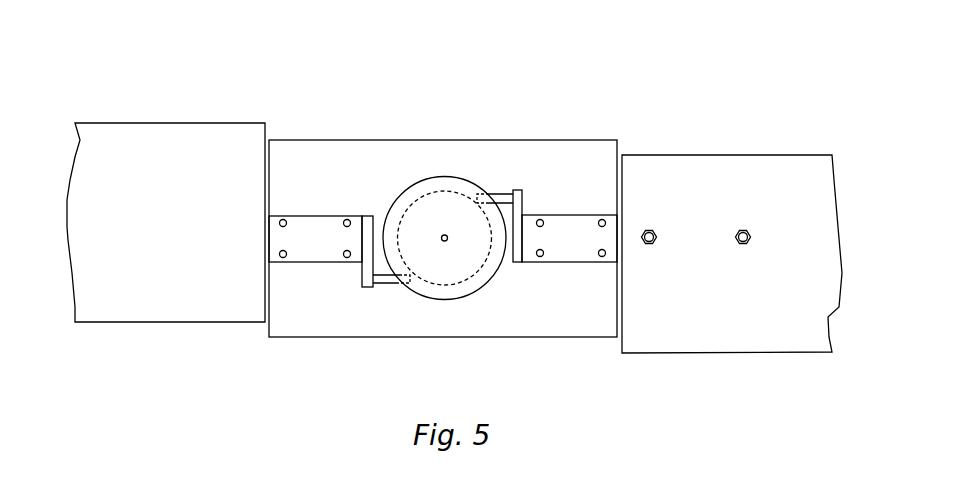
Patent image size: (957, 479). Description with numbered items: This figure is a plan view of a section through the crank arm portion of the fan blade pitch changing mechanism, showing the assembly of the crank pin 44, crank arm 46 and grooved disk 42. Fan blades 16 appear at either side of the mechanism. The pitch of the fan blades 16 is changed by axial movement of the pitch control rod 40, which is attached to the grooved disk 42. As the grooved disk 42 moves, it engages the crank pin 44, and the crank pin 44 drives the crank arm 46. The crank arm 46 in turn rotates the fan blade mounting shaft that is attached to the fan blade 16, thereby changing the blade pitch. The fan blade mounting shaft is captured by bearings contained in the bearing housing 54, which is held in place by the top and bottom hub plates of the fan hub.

The fan blade 16 is at (180, 165).
The pitch control rod 40 is at (447, 242).
The grooved disk 42 is at (437, 183).
The crank pin 44 is at (375, 285).
The crank arm 46 is at (518, 188).
The bearing housing 54 is at (570, 228).